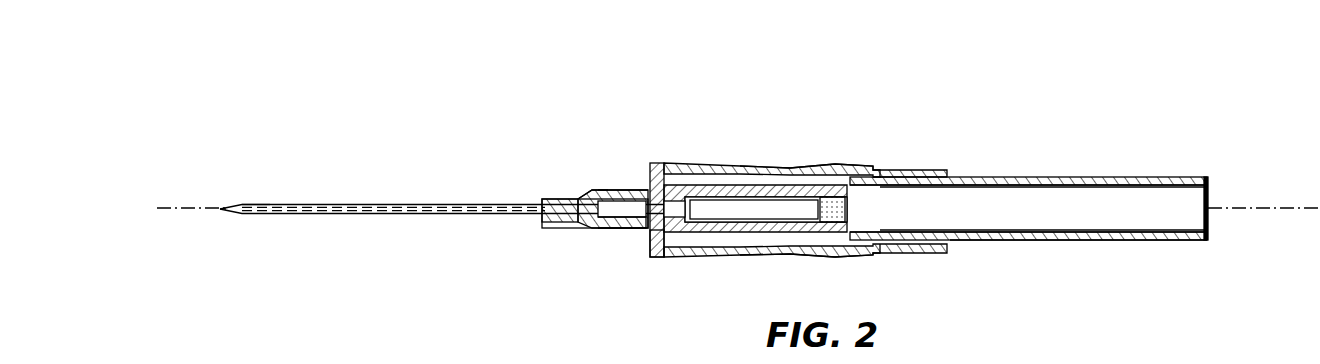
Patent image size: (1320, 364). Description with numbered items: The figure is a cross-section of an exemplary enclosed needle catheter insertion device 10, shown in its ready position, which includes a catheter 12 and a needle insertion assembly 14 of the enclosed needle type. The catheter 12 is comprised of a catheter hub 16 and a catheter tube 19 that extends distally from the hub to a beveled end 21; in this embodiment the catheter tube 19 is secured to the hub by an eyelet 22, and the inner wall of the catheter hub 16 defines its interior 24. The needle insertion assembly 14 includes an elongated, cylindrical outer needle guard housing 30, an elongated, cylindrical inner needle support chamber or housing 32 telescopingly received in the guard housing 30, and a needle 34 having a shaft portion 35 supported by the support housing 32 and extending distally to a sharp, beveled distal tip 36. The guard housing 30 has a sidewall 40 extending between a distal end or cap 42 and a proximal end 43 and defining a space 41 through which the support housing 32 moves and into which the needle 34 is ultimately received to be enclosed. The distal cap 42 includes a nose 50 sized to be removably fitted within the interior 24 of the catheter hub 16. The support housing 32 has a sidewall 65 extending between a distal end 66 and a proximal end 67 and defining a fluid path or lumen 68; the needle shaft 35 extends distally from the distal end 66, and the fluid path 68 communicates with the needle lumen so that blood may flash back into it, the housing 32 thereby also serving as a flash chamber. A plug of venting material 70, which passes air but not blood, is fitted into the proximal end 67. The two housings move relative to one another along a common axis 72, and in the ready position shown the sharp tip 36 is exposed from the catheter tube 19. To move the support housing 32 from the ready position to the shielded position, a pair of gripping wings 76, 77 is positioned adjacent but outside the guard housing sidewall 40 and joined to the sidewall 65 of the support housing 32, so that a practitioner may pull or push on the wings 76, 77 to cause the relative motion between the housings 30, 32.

The enclosed needle catheter insertion device 10 is at (1114, 74).
The catheter 12 is at (558, 168).
The needle insertion assembly 14 is at (826, 150).
The catheter hub 16 is at (578, 192).
The catheter tube 19 is at (406, 203).
The beveled end 21 is at (265, 203).
The eyelet 22 is at (562, 223).
The interior of catheter hub 24 is at (628, 232).
The outer needle guard housing 30 is at (960, 174).
The inner needle support chamber or housing 32 is at (858, 244).
The needle 34 is at (682, 198).
The shaft portion 35 is at (590, 189).
The sharp beveled distal tip 36 is at (222, 212).
The sidewall 40 is at (1060, 244).
The space 41 is at (1110, 200).
The distal end or cap 42 is at (647, 180).
The proximal end 43 is at (1207, 176).
The nose 50 is at (615, 189).
The sidewall 65 is at (738, 233).
The distal end 66 is at (664, 240).
The proximal end 67 is at (847, 190).
The fluid path or lumen 68 is at (754, 210).
The plug of venting material 70 is at (847, 200).
The common axis 72 is at (184, 212).
The gripping wing 76 is at (776, 165).
The gripping wing 77 is at (775, 256).